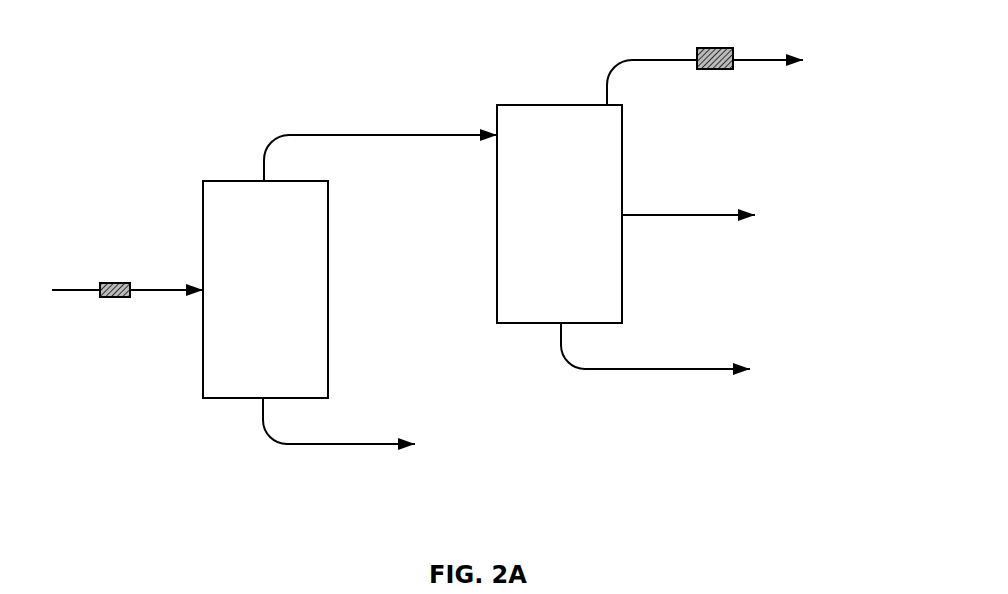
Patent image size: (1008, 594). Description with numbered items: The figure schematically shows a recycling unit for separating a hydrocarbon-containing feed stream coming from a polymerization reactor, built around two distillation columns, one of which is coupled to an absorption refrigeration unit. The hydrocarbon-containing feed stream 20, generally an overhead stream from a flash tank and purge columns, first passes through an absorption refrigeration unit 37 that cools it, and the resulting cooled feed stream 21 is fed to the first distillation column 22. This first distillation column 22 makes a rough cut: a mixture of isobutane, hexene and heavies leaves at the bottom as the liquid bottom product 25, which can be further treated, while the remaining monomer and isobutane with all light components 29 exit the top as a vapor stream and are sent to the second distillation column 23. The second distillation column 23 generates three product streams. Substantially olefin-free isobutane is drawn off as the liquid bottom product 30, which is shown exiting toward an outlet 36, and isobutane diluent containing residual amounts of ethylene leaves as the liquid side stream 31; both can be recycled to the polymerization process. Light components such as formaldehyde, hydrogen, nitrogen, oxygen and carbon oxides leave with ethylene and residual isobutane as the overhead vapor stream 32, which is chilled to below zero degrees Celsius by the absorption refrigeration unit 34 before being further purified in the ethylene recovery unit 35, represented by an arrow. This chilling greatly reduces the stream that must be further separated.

The hydrocarbon-containing feed stream 20 is at (68, 290).
The absorption refrigeration unit 37 is at (112, 288).
The cooled feed stream 21 is at (150, 288).
The first distillation column 22 is at (265, 289).
The remaining monomer, isobutane, with all light components 29 is at (414, 133).
The liquid bottom product 25 is at (373, 442).
The second distillation column 23 is at (559, 214).
The vapor stream 32 is at (659, 58).
The absorption refrigeration unit 34 is at (714, 50).
The ethylene recovery unit 35 is at (790, 59).
The liquid side stream 31 is at (672, 213).
The liquid bottom product 30 is at (677, 367).
The bottoms product stream 36 is at (749, 371).